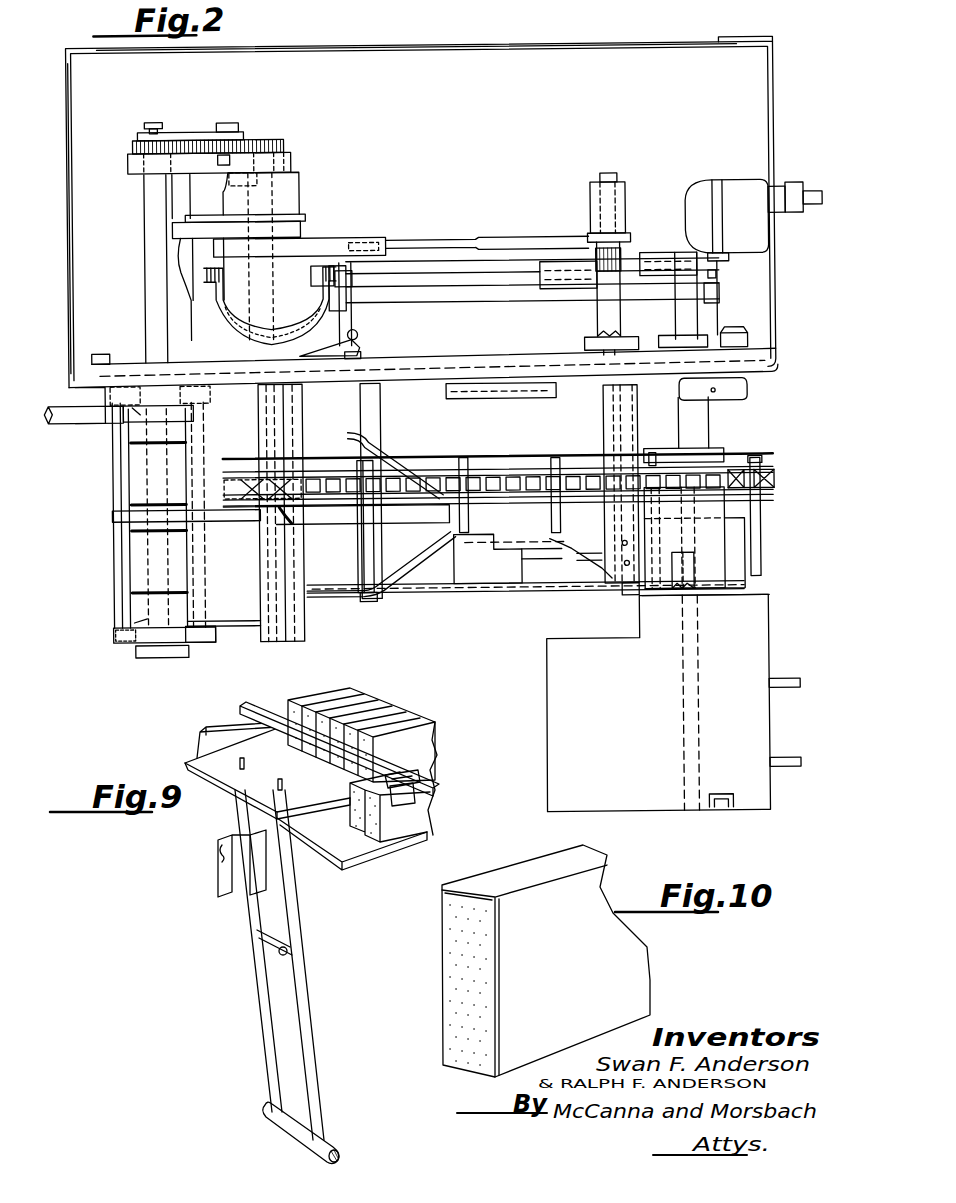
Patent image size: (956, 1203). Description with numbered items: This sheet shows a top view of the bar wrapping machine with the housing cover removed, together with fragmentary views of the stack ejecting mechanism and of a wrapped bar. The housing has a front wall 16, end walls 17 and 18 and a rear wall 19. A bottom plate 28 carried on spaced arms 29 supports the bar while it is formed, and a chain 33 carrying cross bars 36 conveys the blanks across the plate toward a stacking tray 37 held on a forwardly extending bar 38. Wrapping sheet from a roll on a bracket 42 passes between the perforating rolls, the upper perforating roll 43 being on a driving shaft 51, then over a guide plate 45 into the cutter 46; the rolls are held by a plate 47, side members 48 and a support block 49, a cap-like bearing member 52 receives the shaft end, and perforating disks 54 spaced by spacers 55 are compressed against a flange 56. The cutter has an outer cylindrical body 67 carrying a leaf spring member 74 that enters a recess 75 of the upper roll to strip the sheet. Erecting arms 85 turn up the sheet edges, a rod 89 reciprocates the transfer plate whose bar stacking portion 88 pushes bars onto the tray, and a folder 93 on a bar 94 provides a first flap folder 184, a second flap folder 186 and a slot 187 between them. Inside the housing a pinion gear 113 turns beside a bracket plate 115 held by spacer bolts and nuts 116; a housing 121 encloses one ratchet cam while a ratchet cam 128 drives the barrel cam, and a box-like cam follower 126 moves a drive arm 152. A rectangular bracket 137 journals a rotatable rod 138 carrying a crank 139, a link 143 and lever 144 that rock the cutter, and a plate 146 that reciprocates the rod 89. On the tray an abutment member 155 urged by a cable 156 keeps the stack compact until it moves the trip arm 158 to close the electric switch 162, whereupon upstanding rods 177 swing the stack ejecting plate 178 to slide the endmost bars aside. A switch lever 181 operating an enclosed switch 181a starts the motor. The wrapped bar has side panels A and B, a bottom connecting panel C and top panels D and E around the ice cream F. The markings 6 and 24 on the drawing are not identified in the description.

In FIG. 2, the section line 6 is at (232, 505).
In FIG. 2, the front wall 16 is at (770, 378).
In FIG. 2, the end wall 17 is at (776, 108).
In FIG. 2, the end wall 18 is at (69, 149).
In FIG. 2, the rear wall 19 is at (503, 46).
In FIG. 2, the bracket 24 is at (499, 390).
In FIG. 2, the bottom plate 28 is at (426, 592).
In FIG. 2, the spaced arms 29 is at (368, 410).
In FIG. 2, the chain 33 is at (755, 491).
In FIG. 2, the cross bars 36 is at (462, 458).
In FIG. 2, the stacking tray 37 is at (628, 803).
In FIG. 9, the stacking tray 37 is at (352, 850).
In FIG. 2, the forwardly extending bar 38 is at (693, 431).
In FIG. 2, the bracket 42 is at (48, 415).
In FIG. 2, the perforating roll 43 is at (132, 471).
In FIG. 2, the guide plate 45 is at (248, 617).
In FIG. 2, the cutter 46 is at (320, 620).
In FIG. 2, the plate 47 is at (79, 391).
In FIG. 2, the side members 48 is at (118, 619).
In FIG. 2, the support block 49 is at (133, 646).
In FIG. 2, the driving shaft 51 is at (151, 323).
In FIG. 2, the cap-like bearing member 52 is at (190, 643).
In FIG. 2, the perforating disks 54 is at (140, 443).
In FIG. 2, the spacers 55 is at (140, 477).
In FIG. 2, the flange 56 is at (140, 411).
In FIG. 2, the outer cylindrical body 67 is at (303, 631).
In FIG. 9, the outer cylindrical body 67 is at (342, 1153).
In FIG. 2, the leaf spring member 74 is at (208, 516).
In FIG. 2, the recess 75 is at (158, 511).
In FIG. 2, the erecting arms 85 is at (379, 451).
In FIG. 9, the bar stacking portion 88 is at (400, 828).
In FIG. 2, the rod 89 is at (602, 311).
In FIG. 2, the folder 93 is at (525, 563).
In FIG. 2, the bar 94 is at (642, 434).
In FIG. 2, the pinion gear 113 is at (297, 229).
In FIG. 2, the bracket plate 115 is at (290, 157).
In FIG. 2, the spacer bolts and nuts 116 is at (234, 175).
In FIG. 2, the housing 121 is at (294, 189).
In FIG. 2, the box-like cam follower 126 is at (346, 238).
In FIG. 2, the ratchet cam 128 is at (217, 298).
In FIG. 2, the rectangular bracket 137 is at (455, 265).
In FIG. 2, the rotatable rod 138 is at (450, 303).
In FIG. 2, the crank 139 is at (353, 300).
In FIG. 2, the link 143 is at (359, 335).
In FIG. 2, the lever 144 is at (361, 352).
In FIG. 2, the plate 146 is at (651, 264).
In FIG. 2, the drive arm 152 is at (413, 245).
In FIG. 9, the abutment member 155 is at (421, 766).
In FIG. 9, the cable 156 is at (455, 796).
In FIG. 9, the trip arm 158 is at (223, 740).
In FIG. 9, the electric switch 162 is at (242, 880).
In FIG. 9, the upstanding rods 177 is at (306, 1045).
In FIG. 9, the stack ejecting plate 178 is at (220, 770).
In FIG. 2, the switch lever 181 is at (743, 401).
In FIG. 2, the enclosed switch 181a is at (744, 189).
In FIG. 2, the first flap folder 184 is at (488, 563).
In FIG. 2, the second flap folder 186 is at (594, 578).
In FIG. 2, the slot 187 is at (568, 570).
In FIG. 10, the side panel A is at (501, 1010).
In FIG. 10, the side panel B is at (442, 994).
In FIG. 10, the bottom connecting panel C is at (462, 1072).
In FIG. 10, the top panel D is at (540, 870).
In FIG. 10, the top panel E is at (445, 898).
In FIG. 10, the ice cream F is at (458, 952).